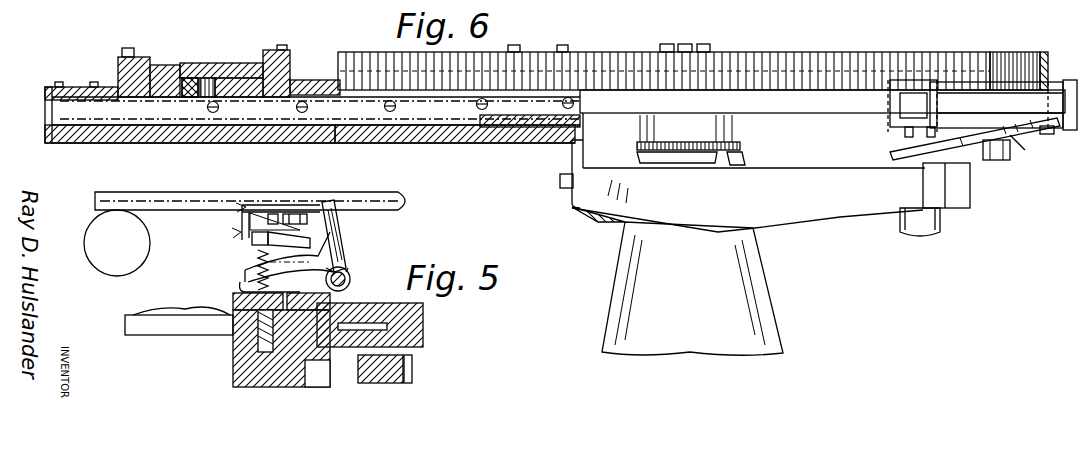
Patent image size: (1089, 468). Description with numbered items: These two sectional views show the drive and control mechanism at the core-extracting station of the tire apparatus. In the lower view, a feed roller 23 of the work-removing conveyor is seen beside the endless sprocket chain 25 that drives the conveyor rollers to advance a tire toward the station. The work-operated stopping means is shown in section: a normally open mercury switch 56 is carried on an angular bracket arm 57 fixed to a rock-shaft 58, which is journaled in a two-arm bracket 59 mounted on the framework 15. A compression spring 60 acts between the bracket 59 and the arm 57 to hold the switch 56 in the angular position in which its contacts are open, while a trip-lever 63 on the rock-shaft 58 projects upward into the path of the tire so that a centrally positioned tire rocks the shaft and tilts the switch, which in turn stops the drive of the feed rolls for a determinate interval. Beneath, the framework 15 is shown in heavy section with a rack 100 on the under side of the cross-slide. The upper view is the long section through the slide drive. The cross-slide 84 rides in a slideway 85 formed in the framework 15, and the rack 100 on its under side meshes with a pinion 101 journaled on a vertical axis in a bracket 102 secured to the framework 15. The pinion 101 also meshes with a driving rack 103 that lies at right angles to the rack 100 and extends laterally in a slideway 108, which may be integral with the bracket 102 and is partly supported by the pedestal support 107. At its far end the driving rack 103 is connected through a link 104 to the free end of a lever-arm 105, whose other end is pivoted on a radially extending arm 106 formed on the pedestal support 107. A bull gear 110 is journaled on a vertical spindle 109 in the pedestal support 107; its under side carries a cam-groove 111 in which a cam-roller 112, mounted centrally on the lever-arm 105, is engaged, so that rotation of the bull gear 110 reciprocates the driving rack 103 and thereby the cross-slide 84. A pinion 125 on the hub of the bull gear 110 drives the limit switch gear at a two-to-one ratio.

In FIG. 5, the framework 15 is at (233, 352).
In FIG. 5, the feed roller 23 is at (107, 276).
In FIG. 5, the endless sprocket chain 25 is at (412, 200).
In FIG. 5, the mercury switch 56 is at (294, 200).
In FIG. 5, the angular bracket arm 57 is at (250, 240).
In FIG. 5, the rock-shaft 58 is at (350, 276).
In FIG. 5, the two-arm bracket 59 is at (240, 283).
In FIG. 5, the compression spring 60 is at (255, 262).
In FIG. 5, the trip-lever 63 is at (346, 228).
In FIG. 6, the cross-slide 84 is at (158, 66).
In FIG. 6, the slideway 85 is at (118, 72).
In FIG. 6, the rack 100 is at (200, 78).
In FIG. 5, the rack 100 is at (392, 384).
In FIG. 6, the pinion 101 is at (214, 80).
In FIG. 6, the bracket 102 is at (179, 143).
In FIG. 6, the driving rack 103 is at (317, 107).
In FIG. 6, the link 104 is at (1040, 128).
In FIG. 6, the lever-arm 105 is at (1025, 150).
In FIG. 6, the radially extending arm 106 is at (836, 213).
In FIG. 6, the pedestal support 107 is at (760, 282).
In FIG. 6, the slideway 108 is at (393, 137).
In FIG. 6, the vertical spindle 109 is at (704, 56).
In FIG. 6, the bull gear 110 is at (876, 50).
In FIG. 6, the cam-groove 111 is at (987, 50).
In FIG. 6, the cam-roller 112 is at (1049, 52).
In FIG. 6, the pinion 125 is at (740, 146).